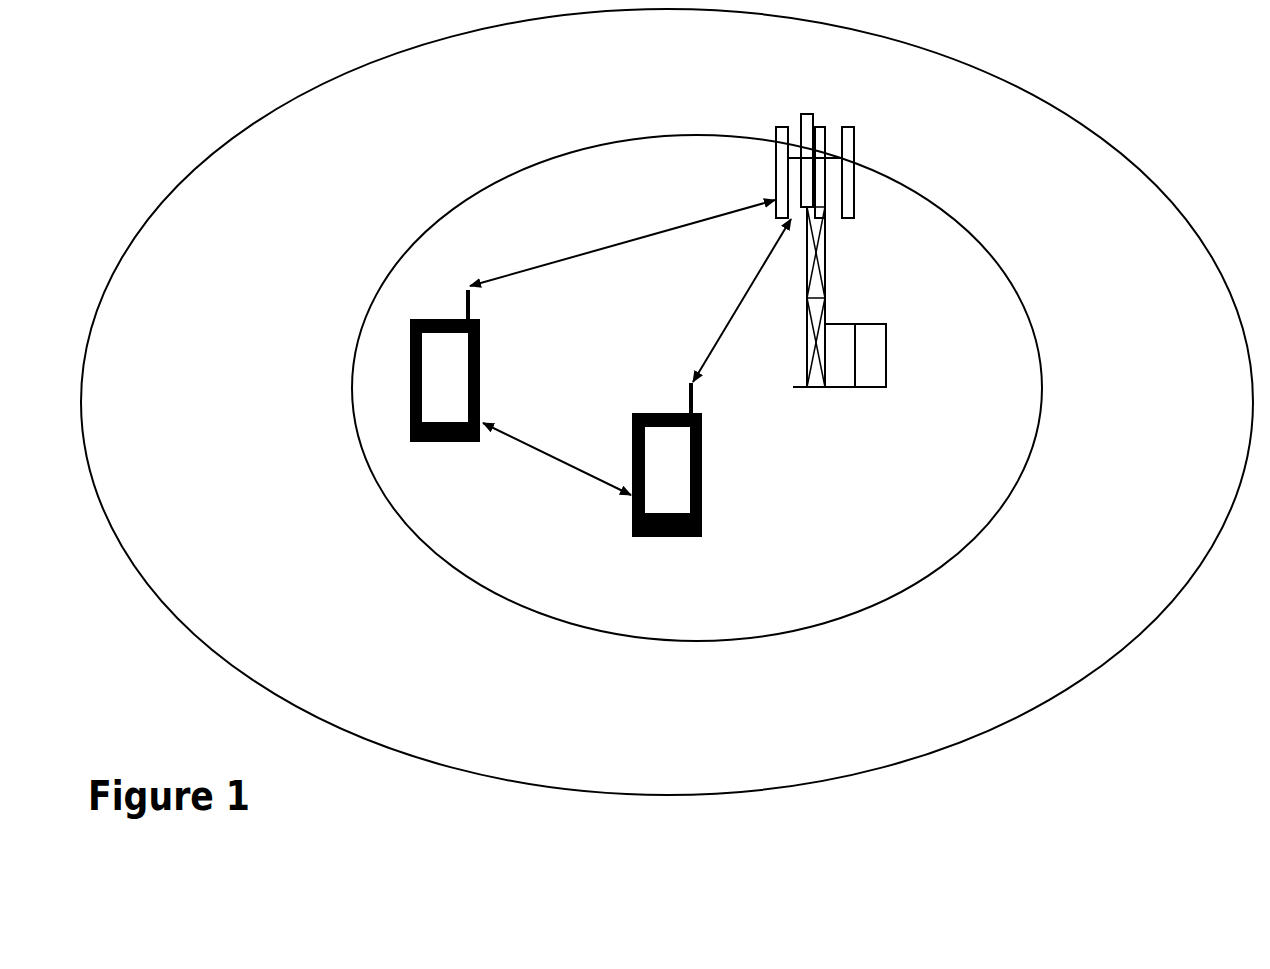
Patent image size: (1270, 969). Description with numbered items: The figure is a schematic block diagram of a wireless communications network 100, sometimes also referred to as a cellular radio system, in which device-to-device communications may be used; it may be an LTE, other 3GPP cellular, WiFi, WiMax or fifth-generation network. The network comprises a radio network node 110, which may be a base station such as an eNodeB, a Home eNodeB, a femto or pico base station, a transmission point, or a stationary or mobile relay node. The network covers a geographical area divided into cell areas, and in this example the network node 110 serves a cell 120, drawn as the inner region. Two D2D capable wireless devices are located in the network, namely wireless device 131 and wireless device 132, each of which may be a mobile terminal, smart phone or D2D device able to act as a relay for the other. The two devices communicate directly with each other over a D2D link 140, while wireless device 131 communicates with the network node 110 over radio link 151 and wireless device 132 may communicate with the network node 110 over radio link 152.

The wireless communications network 100 is at (1042, 705).
The radio network node 110 is at (838, 390).
The cell 120 is at (698, 638).
The wireless device 131 is at (453, 443).
The wireless device 132 is at (707, 502).
The D2D link 140 is at (497, 427).
The radio link 151 is at (567, 257).
The radio link 152 is at (717, 343).